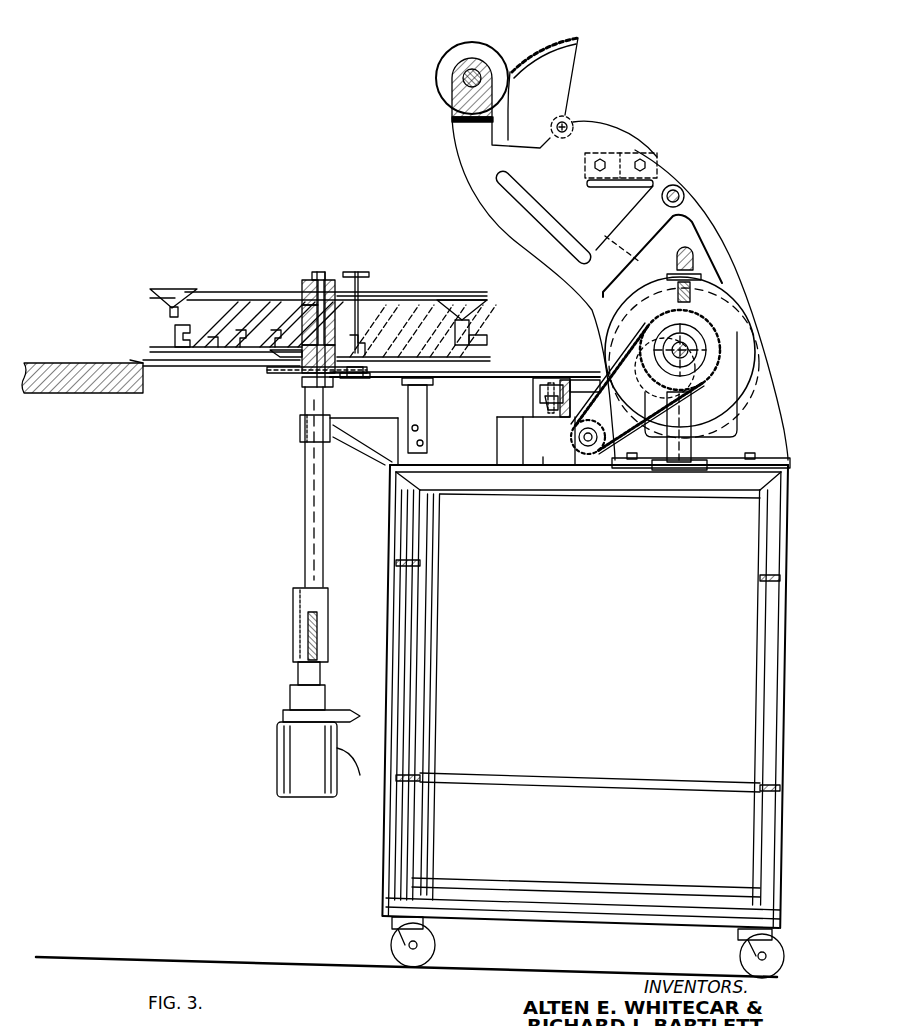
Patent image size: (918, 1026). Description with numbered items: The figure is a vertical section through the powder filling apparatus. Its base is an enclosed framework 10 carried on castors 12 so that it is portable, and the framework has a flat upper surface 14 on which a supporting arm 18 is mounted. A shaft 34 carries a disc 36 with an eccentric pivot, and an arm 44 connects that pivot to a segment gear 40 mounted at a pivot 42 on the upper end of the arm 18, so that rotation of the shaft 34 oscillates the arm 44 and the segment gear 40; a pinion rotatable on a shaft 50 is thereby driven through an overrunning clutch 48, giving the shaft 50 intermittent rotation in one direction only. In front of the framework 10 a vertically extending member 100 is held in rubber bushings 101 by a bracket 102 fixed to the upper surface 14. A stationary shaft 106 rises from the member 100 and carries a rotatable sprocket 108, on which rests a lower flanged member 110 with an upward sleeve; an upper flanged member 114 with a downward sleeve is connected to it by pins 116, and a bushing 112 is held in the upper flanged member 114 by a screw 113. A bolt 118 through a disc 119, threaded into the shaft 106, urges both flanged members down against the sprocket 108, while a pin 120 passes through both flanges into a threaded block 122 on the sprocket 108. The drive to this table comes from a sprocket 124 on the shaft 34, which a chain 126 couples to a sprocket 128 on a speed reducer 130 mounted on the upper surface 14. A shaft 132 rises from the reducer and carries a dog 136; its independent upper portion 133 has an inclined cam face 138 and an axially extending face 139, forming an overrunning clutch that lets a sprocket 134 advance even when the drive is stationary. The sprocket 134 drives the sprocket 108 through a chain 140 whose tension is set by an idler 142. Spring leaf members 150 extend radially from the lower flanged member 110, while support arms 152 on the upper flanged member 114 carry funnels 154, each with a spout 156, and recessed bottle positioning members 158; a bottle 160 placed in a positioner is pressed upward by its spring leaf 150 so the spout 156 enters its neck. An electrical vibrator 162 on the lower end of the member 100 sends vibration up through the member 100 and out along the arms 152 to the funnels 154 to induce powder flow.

The enclosed framework 10 is at (390, 625).
The castors 12 is at (397, 932).
The flat upper surface 14 is at (475, 465).
The supporting arm 18 is at (717, 237).
The shaft 34 is at (700, 384).
The disc 36 is at (712, 410).
The segment gear 40 is at (565, 97).
The pivot 42 is at (552, 120).
The arm 44 is at (597, 228).
The overrunning clutch 48 is at (452, 63).
The shaft 50 is at (464, 80).
The vertically extending member 100 is at (307, 512).
The rubber bushings 101 is at (300, 433).
The bracket 102 is at (367, 446).
The stationary shaft 106 is at (313, 384).
The sprocket 108 is at (287, 377).
The lower flanged member 110 is at (280, 353).
The bushing 112 is at (338, 285).
The screw 113 is at (303, 296).
The upper flanged member 114 is at (293, 296).
The pins 116 is at (340, 372).
The bolt 118 is at (320, 278).
The disc 119 is at (308, 300).
The pin 120 is at (377, 312).
The threaded block 122 is at (347, 374).
The sprocket 124 is at (703, 300).
The chain 126 is at (722, 333).
The sprocket 128 is at (587, 453).
The speed reducer 130 is at (543, 457).
The shaft 132 is at (547, 417).
The independent upper portion 133 is at (560, 383).
The sprocket 134 is at (577, 380).
The dog 136 is at (563, 393).
The inclined cam face 138 is at (547, 400).
The axially extending face 139 is at (543, 390).
The chain 140 is at (520, 376).
The idler 142 is at (433, 382).
The spring leaf members 150 is at (180, 350).
The support arms 152 is at (220, 292).
The funnels 154 is at (167, 292).
The spout 156 is at (170, 308).
The recessed bottle positioning members 158 is at (173, 328).
The bottle 160 is at (483, 328).
The electrical vibrator 162 is at (293, 753).